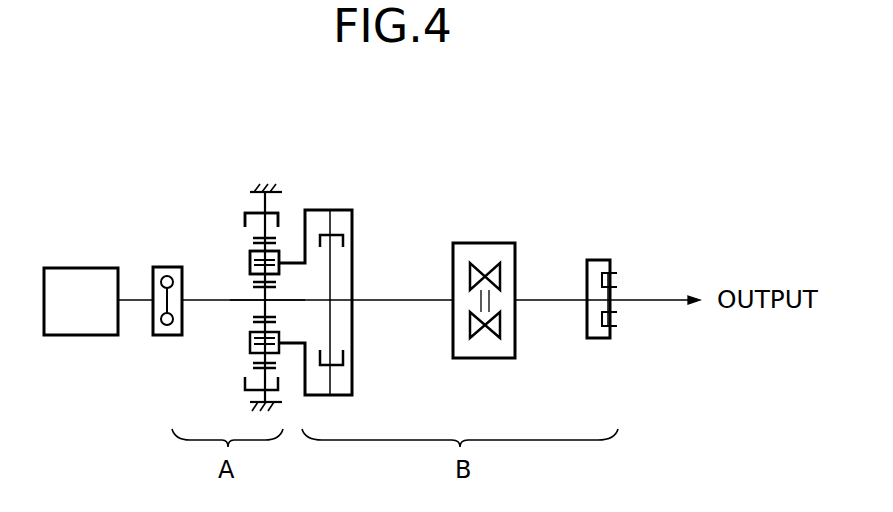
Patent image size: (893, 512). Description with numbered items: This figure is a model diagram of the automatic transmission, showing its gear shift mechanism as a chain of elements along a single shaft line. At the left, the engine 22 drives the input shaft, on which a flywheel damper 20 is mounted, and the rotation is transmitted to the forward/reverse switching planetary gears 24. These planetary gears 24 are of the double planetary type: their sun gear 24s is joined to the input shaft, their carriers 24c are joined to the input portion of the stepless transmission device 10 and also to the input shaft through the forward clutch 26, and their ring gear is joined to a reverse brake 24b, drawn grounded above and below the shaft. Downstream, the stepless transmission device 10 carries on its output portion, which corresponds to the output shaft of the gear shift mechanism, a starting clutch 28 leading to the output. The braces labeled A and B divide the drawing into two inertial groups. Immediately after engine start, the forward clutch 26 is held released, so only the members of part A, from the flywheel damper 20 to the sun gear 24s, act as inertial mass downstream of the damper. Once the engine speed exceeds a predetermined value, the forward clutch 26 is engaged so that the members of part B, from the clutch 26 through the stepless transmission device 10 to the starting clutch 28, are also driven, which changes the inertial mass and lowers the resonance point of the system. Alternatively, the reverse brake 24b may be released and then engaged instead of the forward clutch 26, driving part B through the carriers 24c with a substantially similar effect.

The engine 22 is at (82, 268).
The flywheel damper 20 is at (162, 267).
The planetary gears 24 is at (225, 252).
The sun gear 24s is at (262, 307).
The brake 24b is at (278, 212).
The carriers 24c is at (280, 252).
The forward clutch 26 is at (345, 224).
The stepless transmission device 10 is at (484, 243).
The starting clutch 28 is at (598, 260).